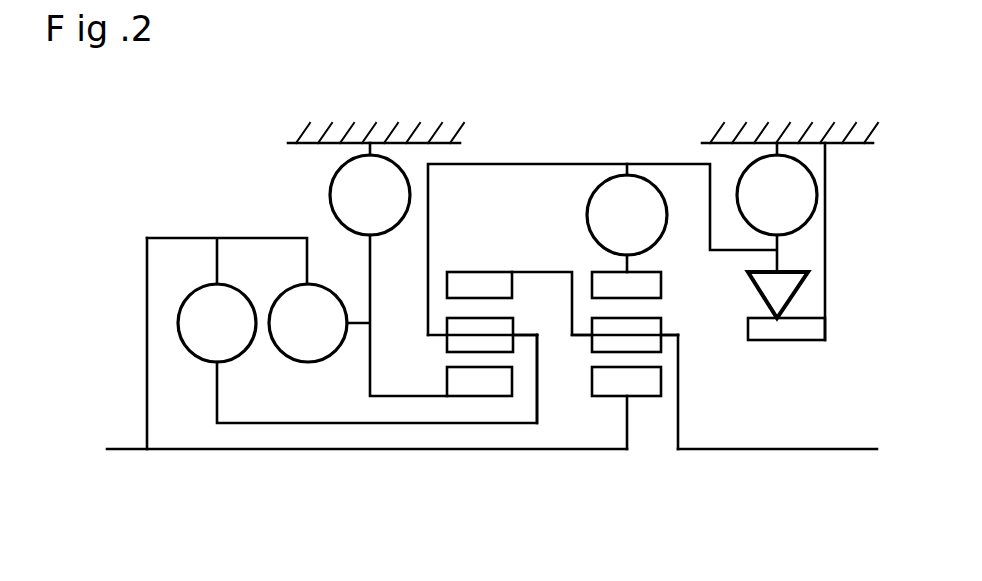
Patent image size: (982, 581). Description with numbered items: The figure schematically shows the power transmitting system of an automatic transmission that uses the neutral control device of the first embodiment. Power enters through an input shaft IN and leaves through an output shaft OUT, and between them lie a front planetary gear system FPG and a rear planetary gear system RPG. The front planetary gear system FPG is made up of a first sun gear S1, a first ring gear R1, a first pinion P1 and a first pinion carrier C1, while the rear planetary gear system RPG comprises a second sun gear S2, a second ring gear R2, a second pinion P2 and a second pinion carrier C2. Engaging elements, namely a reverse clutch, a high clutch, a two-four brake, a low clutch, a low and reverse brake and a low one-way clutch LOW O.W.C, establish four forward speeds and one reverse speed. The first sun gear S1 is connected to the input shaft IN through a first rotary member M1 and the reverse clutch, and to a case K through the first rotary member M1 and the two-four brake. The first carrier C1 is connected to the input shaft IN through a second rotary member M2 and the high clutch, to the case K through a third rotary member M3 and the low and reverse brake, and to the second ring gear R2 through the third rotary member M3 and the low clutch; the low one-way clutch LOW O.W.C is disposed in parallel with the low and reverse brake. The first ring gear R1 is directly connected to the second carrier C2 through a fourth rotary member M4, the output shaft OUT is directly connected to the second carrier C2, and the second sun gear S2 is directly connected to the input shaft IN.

The case K is at (316, 144).
The first rotary member M1 is at (397, 315).
The second rotary member M2 is at (377, 379).
The third rotary member M3 is at (602, 249).
The fourth rotary member M4 is at (552, 289).
The first ring gear R1 is at (479, 286).
The second ring gear R2 is at (626, 286).
The first sun gear S1 is at (479, 383).
The second sun gear S2 is at (626, 383).
The first pinion P1 is at (503, 316).
The second pinion P2 is at (690, 299).
The first pinion carrier C1 is at (530, 333).
The second pinion carrier C2 is at (672, 333).
The front planetary gear system FPG is at (490, 477).
The rear planetary gear system RPG is at (630, 477).
The input shaft IN is at (367, 344).
The output shaft OUT is at (778, 434).
The low one-way clutch LOW O.W.C is at (823, 243).